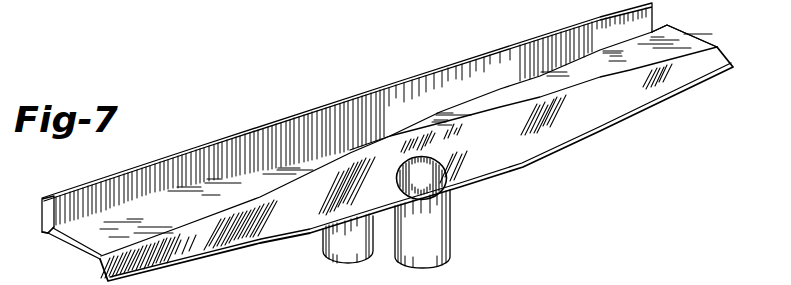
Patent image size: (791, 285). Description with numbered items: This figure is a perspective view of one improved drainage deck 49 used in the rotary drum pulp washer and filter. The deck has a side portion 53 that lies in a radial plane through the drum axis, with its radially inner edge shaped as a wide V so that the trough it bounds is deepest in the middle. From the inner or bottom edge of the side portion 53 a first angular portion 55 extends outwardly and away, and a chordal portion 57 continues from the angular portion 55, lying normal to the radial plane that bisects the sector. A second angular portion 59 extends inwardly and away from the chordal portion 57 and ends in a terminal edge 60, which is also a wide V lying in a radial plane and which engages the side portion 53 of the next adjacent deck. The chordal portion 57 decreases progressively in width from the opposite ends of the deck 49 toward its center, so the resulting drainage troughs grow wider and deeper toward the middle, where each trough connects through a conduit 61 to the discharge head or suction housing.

The drainage deck 49 is at (612, 152).
The side portion 53 is at (652, 12).
The first angular portion 55 is at (48, 236).
The chordal portion 57 is at (88, 255).
The second angular portion 59 is at (293, 229).
The terminal edge 60 is at (246, 247).
The conduit 61 is at (397, 262).